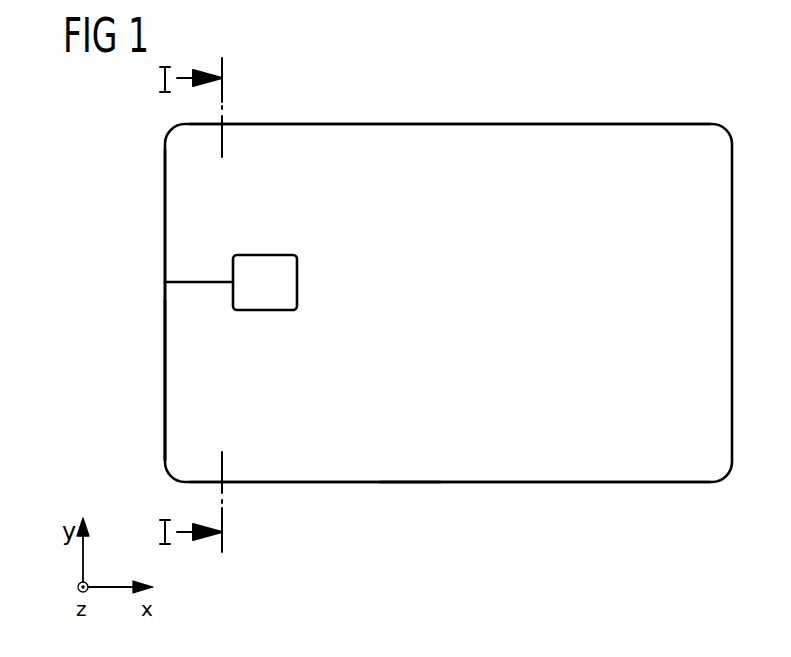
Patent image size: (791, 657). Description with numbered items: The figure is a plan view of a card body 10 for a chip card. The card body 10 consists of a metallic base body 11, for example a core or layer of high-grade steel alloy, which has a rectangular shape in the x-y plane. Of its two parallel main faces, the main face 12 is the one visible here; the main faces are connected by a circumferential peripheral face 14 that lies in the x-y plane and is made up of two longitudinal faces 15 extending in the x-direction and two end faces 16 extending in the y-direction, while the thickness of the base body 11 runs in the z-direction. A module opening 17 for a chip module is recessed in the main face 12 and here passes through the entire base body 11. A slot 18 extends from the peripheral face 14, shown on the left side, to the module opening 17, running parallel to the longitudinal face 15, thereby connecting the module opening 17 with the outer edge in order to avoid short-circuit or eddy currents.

The card body 10 is at (565, 522).
The metallic base body 11 is at (352, 473).
The main face 12 is at (448, 140).
The peripheral face 14 is at (152, 386).
The longitudinal face 15 is at (410, 482).
The end face 16 is at (165, 212).
The module opening 17 is at (285, 285).
The slot 18 is at (200, 284).